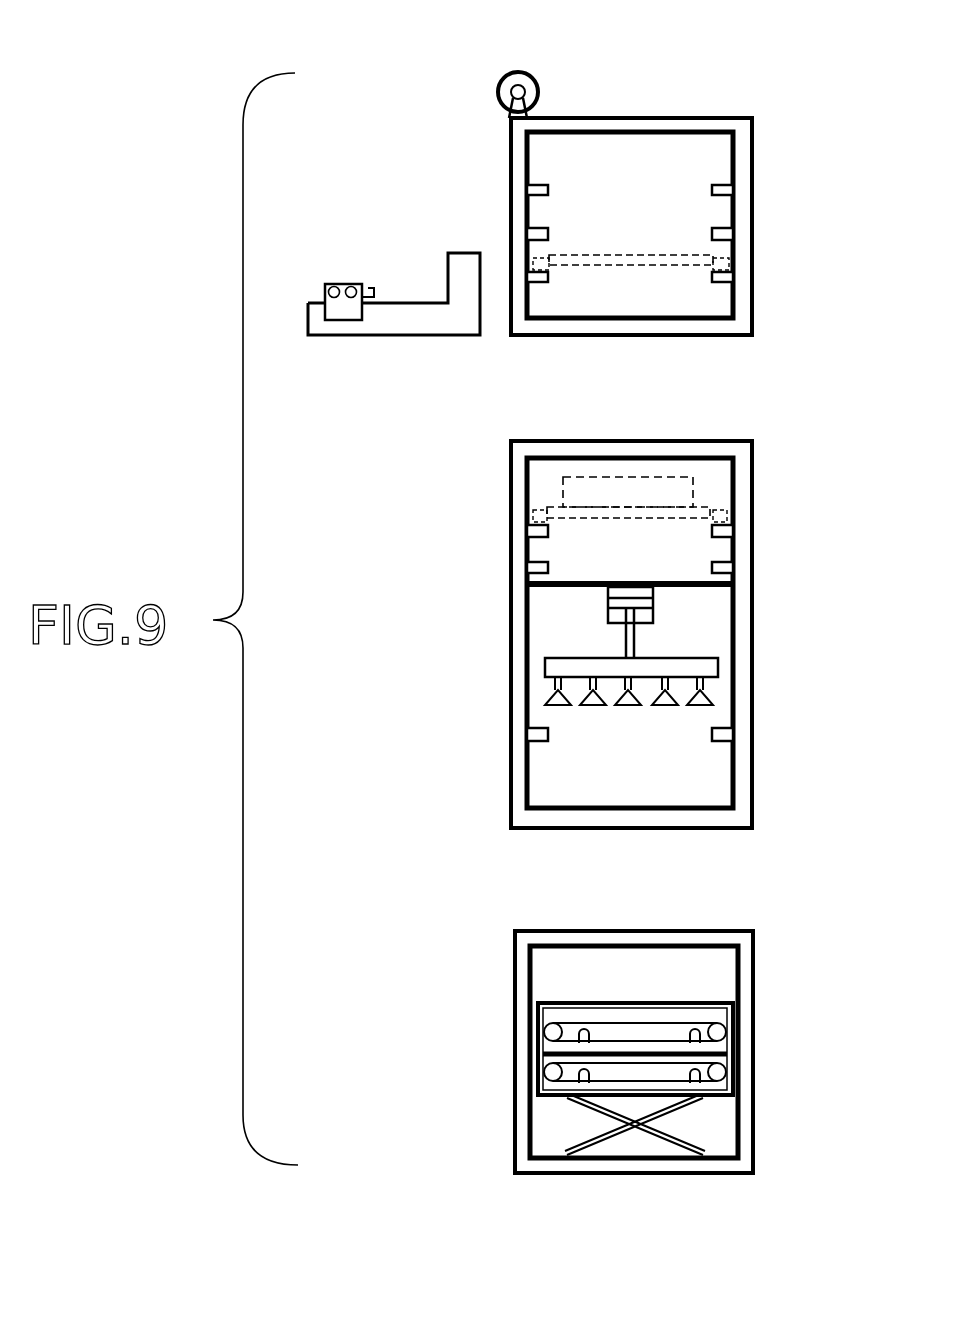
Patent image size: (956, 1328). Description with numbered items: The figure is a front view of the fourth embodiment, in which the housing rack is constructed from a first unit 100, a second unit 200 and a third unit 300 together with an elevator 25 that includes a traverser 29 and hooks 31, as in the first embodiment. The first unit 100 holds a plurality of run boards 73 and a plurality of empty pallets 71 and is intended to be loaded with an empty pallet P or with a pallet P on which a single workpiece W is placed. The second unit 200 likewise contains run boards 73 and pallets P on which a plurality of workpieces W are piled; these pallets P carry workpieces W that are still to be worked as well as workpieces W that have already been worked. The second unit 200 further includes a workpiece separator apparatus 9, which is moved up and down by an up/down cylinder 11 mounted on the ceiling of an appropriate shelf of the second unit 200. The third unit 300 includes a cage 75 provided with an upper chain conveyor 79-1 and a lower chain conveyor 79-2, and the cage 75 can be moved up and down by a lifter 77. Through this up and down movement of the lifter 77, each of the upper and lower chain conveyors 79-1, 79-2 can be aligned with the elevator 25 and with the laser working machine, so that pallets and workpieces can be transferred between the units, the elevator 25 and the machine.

The first unit 100 is at (679, 191).
The second unit 200 is at (671, 595).
The third unit 300 is at (647, 1020).
The elevator 25 is at (413, 318).
The traverser 29 is at (340, 283).
The hooks 31 is at (373, 291).
The empty pallets 71 is at (601, 255).
The run boards 73 is at (712, 278).
The workpiece W is at (630, 487).
The pallet P is at (625, 515).
The workpiece separator apparatus 9 is at (566, 654).
The up/down cylinder 11 is at (647, 602).
The cage 75 is at (576, 987).
The upper chain conveyor 79-1 is at (565, 1028).
The lower chain conveyor 79-2 is at (572, 1070).
The lifter 77 is at (690, 1132).